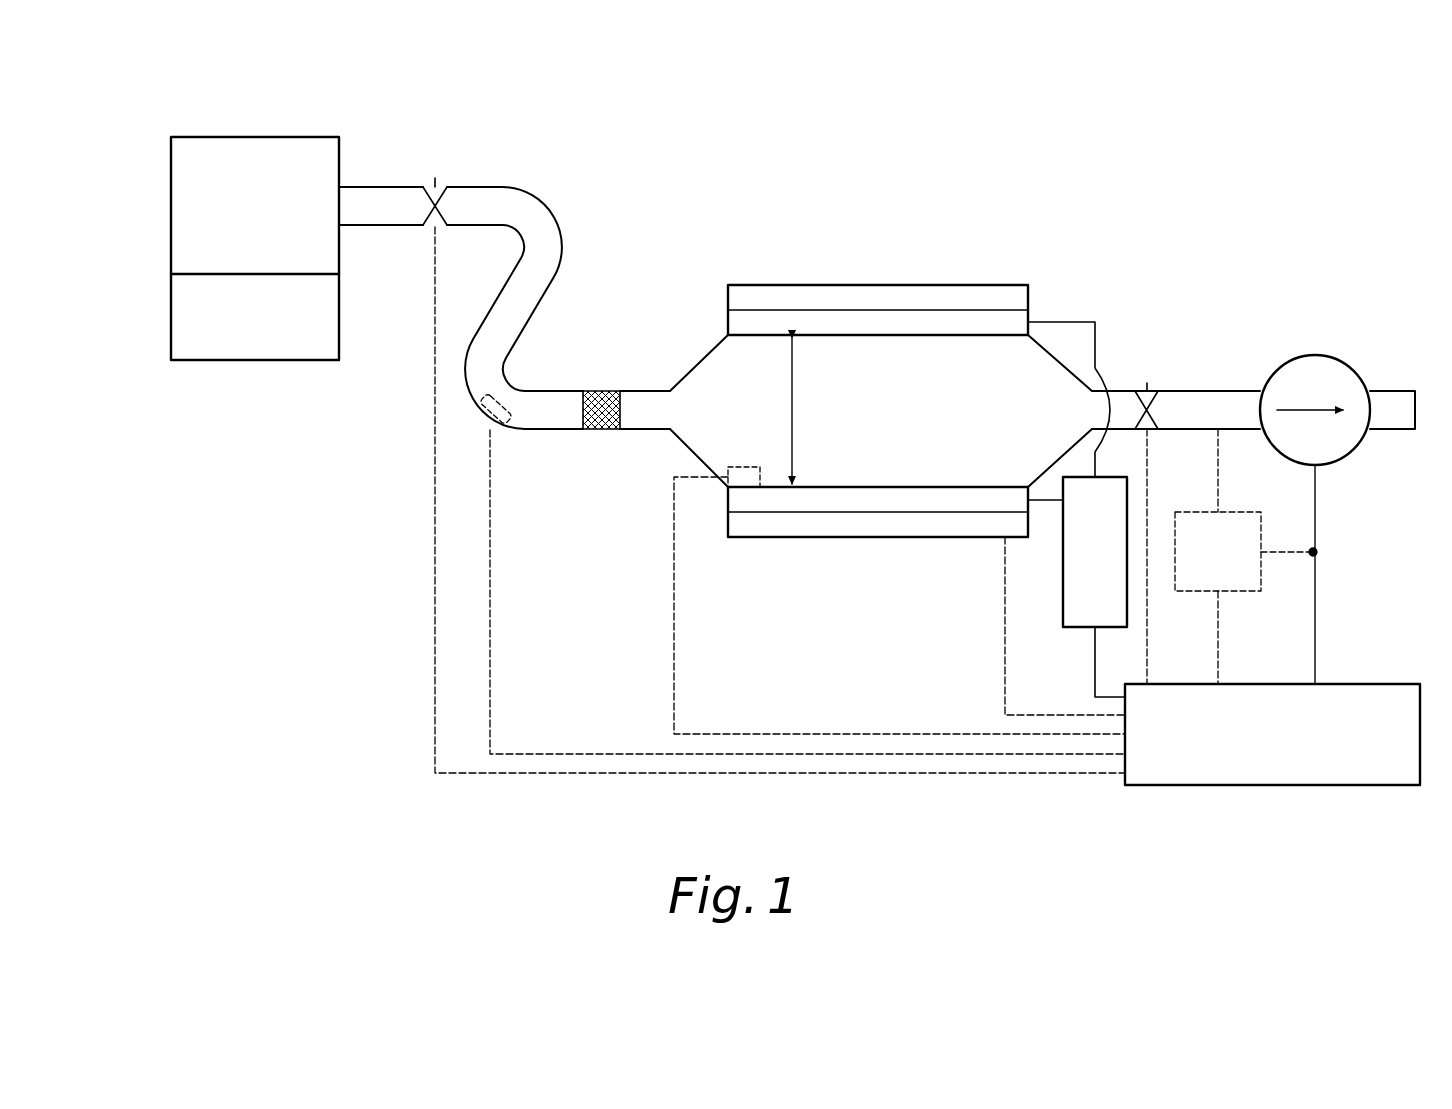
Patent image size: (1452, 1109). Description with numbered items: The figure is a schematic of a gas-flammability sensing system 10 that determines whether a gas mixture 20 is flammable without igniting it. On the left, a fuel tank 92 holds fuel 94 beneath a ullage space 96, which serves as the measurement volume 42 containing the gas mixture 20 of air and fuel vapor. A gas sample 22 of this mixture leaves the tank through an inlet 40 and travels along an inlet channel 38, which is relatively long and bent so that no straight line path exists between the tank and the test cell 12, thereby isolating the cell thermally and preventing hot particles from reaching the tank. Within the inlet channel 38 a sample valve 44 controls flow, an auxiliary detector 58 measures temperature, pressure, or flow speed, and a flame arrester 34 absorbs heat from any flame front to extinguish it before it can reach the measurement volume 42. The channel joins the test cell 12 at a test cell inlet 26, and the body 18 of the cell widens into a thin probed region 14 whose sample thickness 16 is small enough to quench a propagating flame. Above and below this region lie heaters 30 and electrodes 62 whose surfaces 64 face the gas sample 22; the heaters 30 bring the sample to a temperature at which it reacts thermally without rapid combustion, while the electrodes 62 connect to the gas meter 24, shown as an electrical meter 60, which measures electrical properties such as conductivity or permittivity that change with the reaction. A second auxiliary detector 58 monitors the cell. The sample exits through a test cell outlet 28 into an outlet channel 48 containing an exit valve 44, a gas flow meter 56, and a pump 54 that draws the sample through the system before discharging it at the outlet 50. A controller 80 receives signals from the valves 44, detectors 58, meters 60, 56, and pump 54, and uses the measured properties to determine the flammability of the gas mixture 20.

The gas-flammability sensing system 10 is at (510, 60).
The test cell 12 is at (878, 195).
The probed region 14 is at (847, 248).
The sample thickness 16 is at (795, 393).
The body 18 is at (700, 360).
The gas mixture 20 is at (247, 152).
The gas sample 22 is at (882, 460).
The gas meter 24 is at (733, 267).
The test cell inlet 26 is at (668, 388).
The test cell outlet 28 is at (1092, 390).
The heater 30 is at (932, 284).
The flame arrester 34 is at (598, 430).
The inlet channel 38 is at (535, 195).
The inlet 40 is at (337, 203).
The measurement volume 42 is at (140, 232).
The valve 44 is at (442, 200).
The outlet channel 48 is at (1238, 391).
The outlet 50 is at (1415, 405).
The pump 54 is at (1354, 449).
The gas flow meter 56 is at (1243, 512).
The auxiliary detector 58 is at (512, 420).
The electrical meter 60 is at (1127, 490).
The electrode 62 is at (726, 320).
The surface 64 is at (913, 336).
The controller 80 is at (1272, 734).
The fuel tank 92 is at (206, 136).
The fuel 94 is at (255, 307).
The ullage space 96 is at (255, 229).